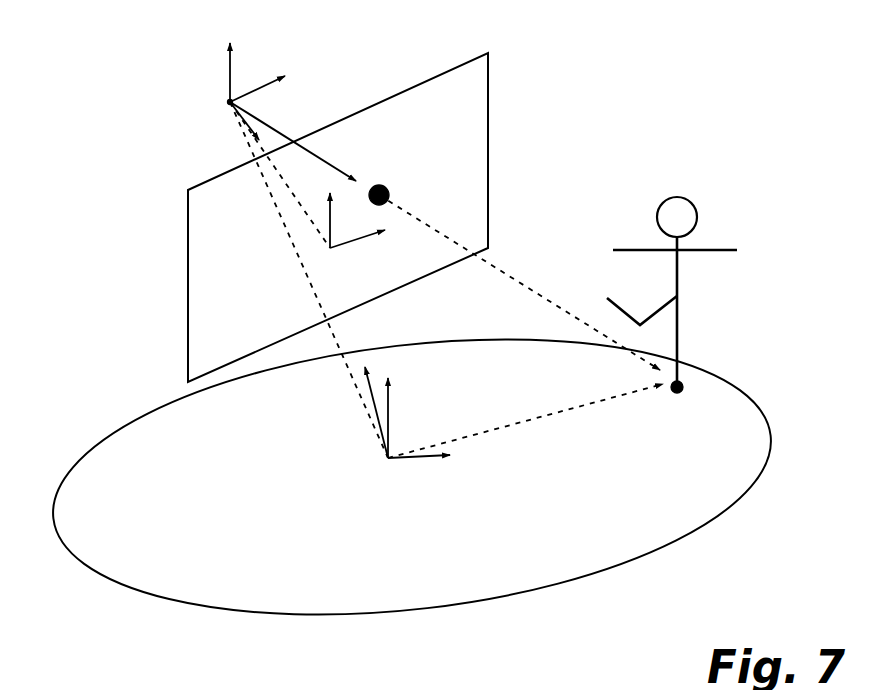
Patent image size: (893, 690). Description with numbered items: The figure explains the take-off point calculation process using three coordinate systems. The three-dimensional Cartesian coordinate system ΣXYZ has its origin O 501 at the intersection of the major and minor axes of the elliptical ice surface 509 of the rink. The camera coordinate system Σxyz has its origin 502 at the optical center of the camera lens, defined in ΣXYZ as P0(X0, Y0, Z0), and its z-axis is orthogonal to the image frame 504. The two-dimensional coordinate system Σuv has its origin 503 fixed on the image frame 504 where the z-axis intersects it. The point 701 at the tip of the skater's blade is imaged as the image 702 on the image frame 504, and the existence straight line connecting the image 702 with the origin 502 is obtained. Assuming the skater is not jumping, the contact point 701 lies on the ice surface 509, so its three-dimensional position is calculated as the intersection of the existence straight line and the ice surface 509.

The origin O (0,0,0) 501 is at (388, 462).
The origin of the coordinate system Σxyz 502 is at (229, 104).
The origin of the coordinate system Σuv 503 is at (332, 250).
The image frame 504 is at (488, 135).
The ice surface 509 is at (697, 537).
The contact point 701 is at (682, 368).
The image of the point 702 is at (393, 192).